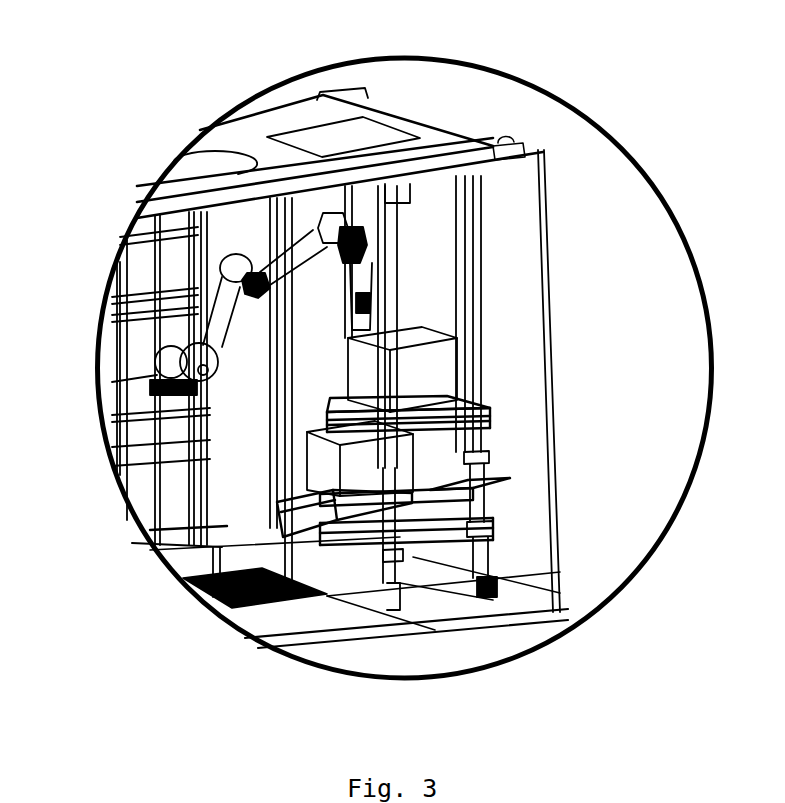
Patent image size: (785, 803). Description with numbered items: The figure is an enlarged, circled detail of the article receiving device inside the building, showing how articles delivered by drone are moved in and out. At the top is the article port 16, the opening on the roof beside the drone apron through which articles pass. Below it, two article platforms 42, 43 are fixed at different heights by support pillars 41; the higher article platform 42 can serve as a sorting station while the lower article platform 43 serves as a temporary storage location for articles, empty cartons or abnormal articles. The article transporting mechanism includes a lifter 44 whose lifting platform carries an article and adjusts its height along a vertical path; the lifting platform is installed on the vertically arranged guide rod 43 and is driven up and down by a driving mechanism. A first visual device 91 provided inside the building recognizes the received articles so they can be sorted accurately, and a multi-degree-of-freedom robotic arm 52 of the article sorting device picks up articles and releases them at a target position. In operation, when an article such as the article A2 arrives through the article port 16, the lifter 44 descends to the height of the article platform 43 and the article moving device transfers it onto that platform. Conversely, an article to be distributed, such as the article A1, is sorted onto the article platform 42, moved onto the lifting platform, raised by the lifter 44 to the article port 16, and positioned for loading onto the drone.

The article port 16 is at (337, 133).
The first visual device 91 is at (400, 192).
The support pillar 41 is at (460, 265).
The article platform 42 is at (440, 413).
The article platform 43 is at (282, 340).
The lifter 44 is at (303, 508).
The multi-degree-of-freedom robotic arm 52 is at (310, 243).
The article A1 is at (430, 368).
The article A2 is at (317, 458).